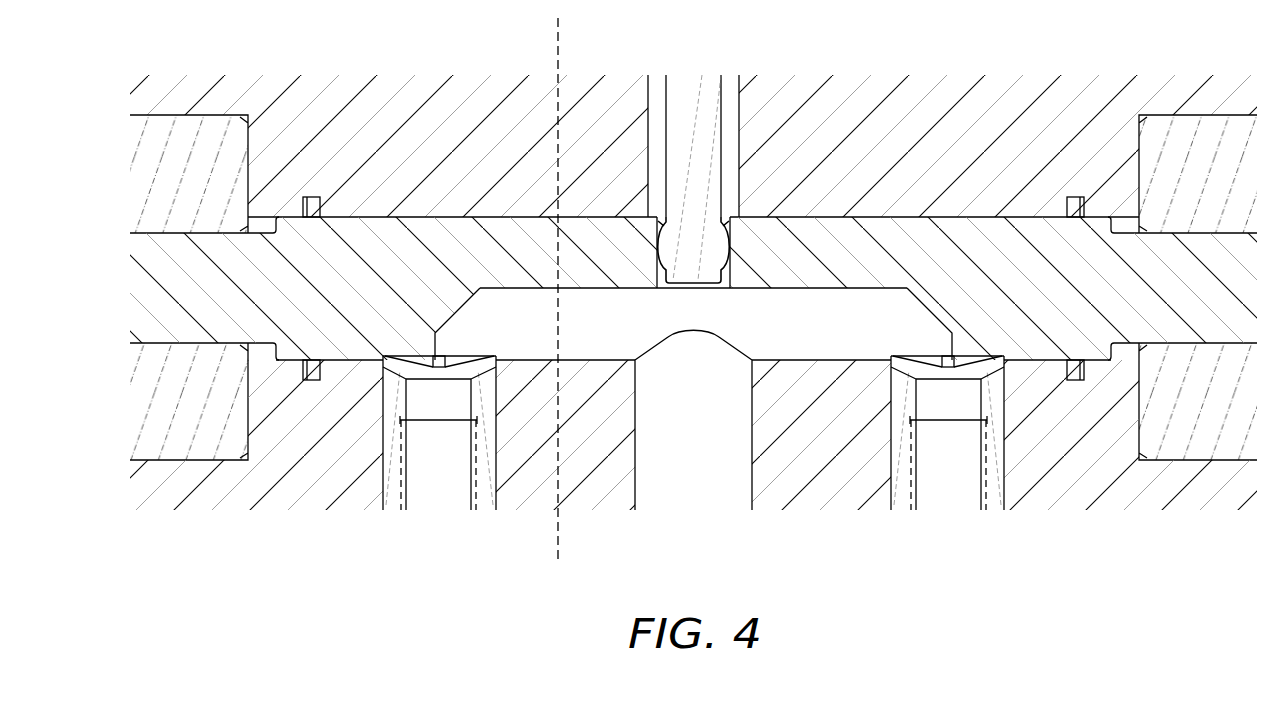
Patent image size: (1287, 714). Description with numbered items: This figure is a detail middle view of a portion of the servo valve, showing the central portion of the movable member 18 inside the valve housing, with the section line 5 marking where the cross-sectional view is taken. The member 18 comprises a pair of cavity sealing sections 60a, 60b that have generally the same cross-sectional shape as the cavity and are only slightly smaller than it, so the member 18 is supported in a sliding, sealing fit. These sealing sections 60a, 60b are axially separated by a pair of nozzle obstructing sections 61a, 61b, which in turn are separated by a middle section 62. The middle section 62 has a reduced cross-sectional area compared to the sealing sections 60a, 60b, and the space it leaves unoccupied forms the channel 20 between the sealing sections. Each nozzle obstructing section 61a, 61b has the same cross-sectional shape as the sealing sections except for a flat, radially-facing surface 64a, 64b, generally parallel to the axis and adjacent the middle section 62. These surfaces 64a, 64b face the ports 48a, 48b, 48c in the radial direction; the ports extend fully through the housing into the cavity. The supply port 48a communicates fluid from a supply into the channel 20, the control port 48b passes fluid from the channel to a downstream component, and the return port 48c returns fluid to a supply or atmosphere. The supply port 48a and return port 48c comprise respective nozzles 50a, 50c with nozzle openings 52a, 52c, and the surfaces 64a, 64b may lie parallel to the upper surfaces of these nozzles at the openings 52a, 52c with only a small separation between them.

The member 18 is at (797, 251).
The channel 20 is at (818, 333).
The supply port 48a is at (439, 513).
The control port 48b is at (694, 513).
The return port 48c is at (948, 513).
The nozzle 50a is at (485, 495).
The nozzle 50c is at (902, 495).
The nozzle opening 52a is at (438, 356).
The nozzle opening 52c is at (949, 356).
The cavity sealing section 60a is at (325, 260).
The cavity sealing section 60b is at (1085, 261).
The nozzle obstructing section 61a is at (426, 261).
The nozzle obstructing section 61b is at (950, 261).
The middle section 62 is at (627, 268).
The flat radially-facing surface 64a is at (391, 366).
The flat radially-facing surface 64b is at (996, 366).
The section line 5- 5 is at (563, 26).